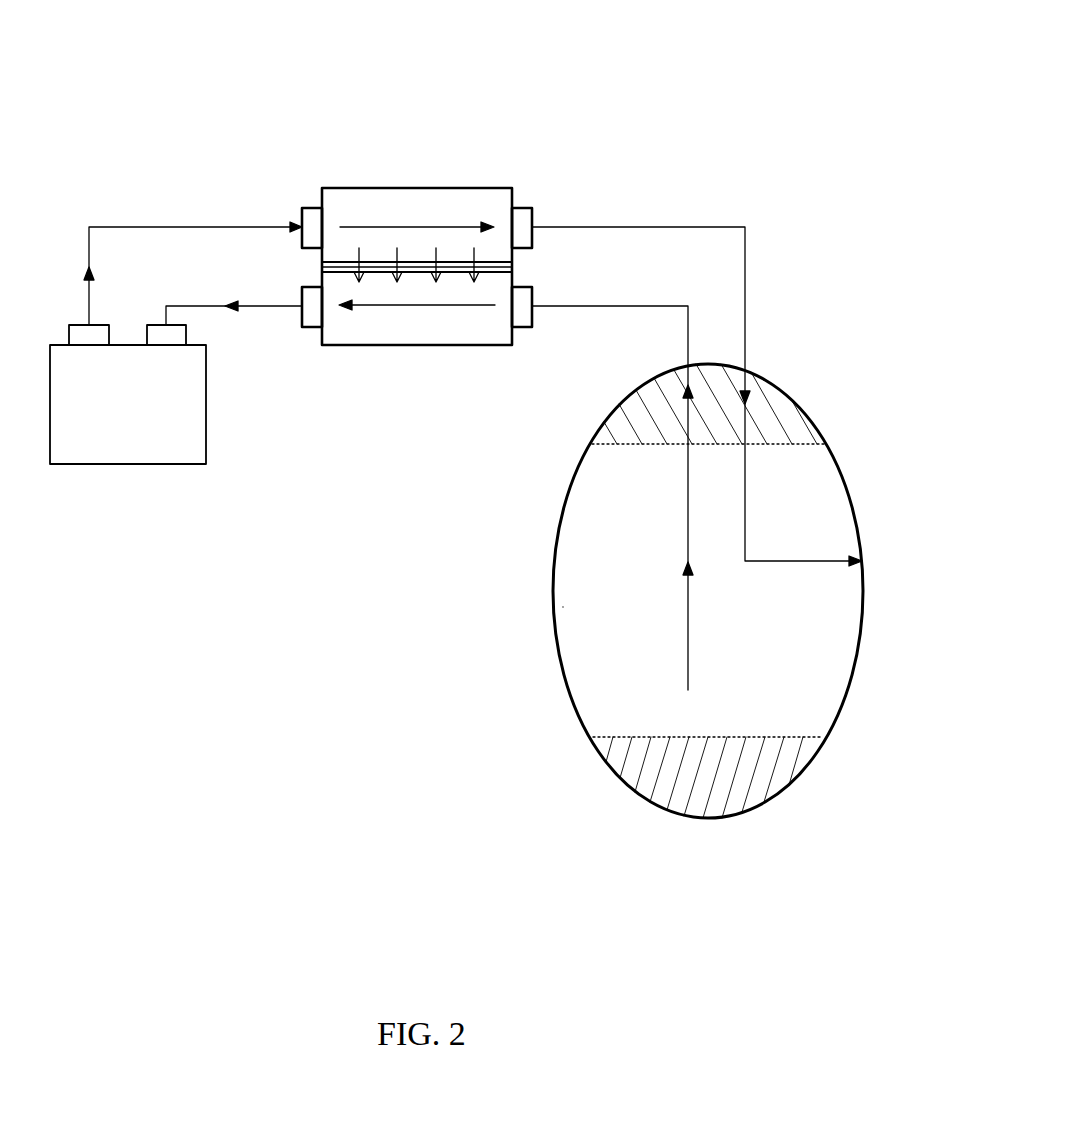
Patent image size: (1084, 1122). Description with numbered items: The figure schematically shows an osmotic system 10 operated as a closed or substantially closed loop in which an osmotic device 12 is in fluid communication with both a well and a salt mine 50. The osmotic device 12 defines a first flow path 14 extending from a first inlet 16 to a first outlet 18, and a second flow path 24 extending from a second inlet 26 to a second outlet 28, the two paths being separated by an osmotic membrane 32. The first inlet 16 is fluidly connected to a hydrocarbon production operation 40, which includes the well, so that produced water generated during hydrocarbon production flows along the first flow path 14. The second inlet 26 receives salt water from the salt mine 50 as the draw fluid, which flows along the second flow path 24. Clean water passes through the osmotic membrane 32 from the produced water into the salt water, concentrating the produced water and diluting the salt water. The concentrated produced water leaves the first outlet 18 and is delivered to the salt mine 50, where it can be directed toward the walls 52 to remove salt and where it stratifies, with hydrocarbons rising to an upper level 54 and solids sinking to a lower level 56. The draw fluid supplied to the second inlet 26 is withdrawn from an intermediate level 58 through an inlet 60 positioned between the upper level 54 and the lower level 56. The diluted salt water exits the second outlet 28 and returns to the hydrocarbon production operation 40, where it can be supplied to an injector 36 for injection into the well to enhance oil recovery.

The osmotic system 10 is at (613, 97).
The osmotic device 12 is at (412, 187).
The first flow path 14 is at (433, 225).
The first inlet 16 is at (307, 205).
The first outlet 18 is at (530, 205).
The second flow path 24 is at (403, 307).
The second inlet 26 is at (527, 330).
The second outlet 28 is at (307, 333).
The osmotic membrane 32 is at (513, 277).
The injector 36 is at (187, 335).
The hydrocarbon production operation 40 is at (141, 419).
The salt mine 50 is at (787, 392).
The walls 52 is at (860, 540).
The upper level 54 is at (613, 426).
The lower level 56 is at (767, 772).
The intermediate level 58 is at (563, 607).
The inlet 60 is at (688, 690).